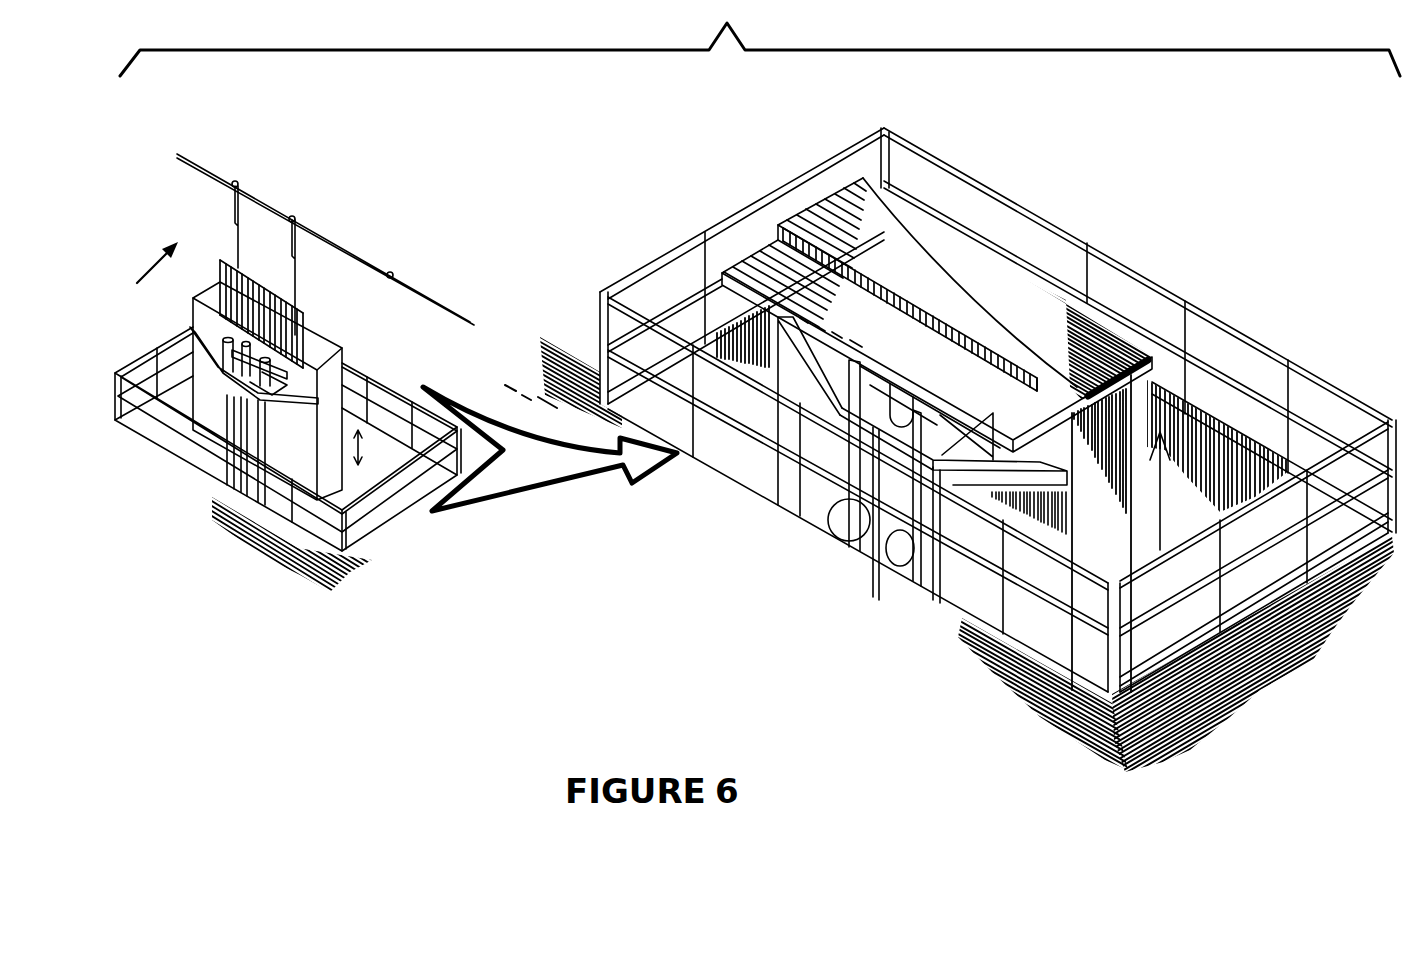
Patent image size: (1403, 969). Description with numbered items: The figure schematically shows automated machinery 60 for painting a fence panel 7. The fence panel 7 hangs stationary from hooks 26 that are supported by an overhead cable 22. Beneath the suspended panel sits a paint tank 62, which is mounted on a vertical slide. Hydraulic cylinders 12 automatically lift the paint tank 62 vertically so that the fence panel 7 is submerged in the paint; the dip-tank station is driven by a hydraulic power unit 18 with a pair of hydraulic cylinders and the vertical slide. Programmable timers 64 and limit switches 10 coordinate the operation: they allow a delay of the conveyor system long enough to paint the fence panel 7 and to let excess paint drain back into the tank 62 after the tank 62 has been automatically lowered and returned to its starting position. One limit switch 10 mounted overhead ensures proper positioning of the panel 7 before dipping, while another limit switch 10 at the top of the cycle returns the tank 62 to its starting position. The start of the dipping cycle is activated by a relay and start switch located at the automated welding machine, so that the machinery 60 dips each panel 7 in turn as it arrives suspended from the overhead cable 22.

The fence panel 7 is at (322, 334).
The limit switch 10 is at (414, 196).
The hydraulic cylinders 12 is at (937, 500).
The hydraulic power unit 18 is at (858, 530).
The overhead cable 22 is at (390, 274).
The hooks 26 is at (237, 237).
The automated machinery 60 is at (416, 335).
The paint tank 62 is at (298, 378).
The programmable timers 64 is at (139, 276).